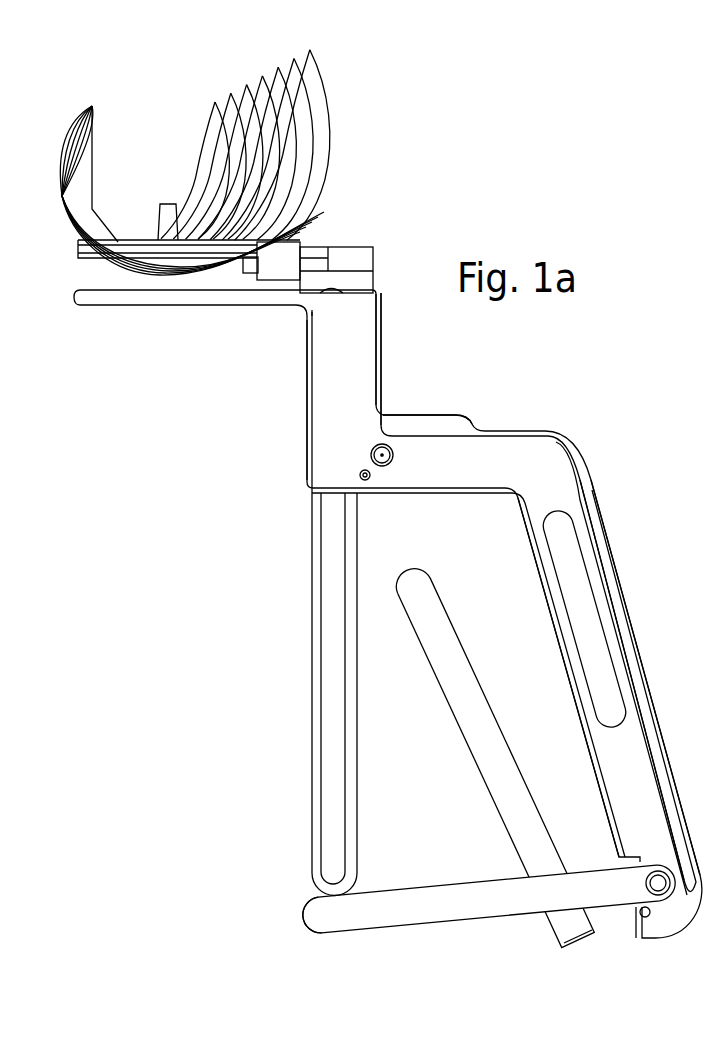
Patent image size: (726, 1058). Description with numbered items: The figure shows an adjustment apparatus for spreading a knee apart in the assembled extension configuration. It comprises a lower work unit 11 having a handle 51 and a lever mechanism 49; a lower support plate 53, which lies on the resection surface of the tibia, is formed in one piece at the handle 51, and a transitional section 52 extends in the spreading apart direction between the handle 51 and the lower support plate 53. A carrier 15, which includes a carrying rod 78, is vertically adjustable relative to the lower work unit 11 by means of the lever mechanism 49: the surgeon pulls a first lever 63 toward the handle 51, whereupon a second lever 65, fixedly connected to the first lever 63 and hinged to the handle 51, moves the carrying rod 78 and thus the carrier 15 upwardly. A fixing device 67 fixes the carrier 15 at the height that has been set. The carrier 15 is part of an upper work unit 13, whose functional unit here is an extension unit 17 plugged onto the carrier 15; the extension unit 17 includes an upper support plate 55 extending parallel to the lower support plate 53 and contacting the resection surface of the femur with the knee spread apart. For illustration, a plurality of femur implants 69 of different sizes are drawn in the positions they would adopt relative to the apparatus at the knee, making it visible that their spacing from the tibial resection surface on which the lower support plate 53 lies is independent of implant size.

The lower work unit 11 is at (637, 498).
The upper work unit 13 is at (352, 245).
The carrier 15 is at (305, 585).
The extension unit 17 is at (295, 241).
The lever mechanism 49 is at (313, 935).
The handle 51 is at (638, 667).
The transitional section 52 is at (325, 388).
The lower support plate 53 is at (122, 295).
The upper support plate 55 is at (135, 243).
The first lever 63 is at (448, 673).
The second lever 65 is at (450, 892).
The fixing device 67 is at (435, 427).
The femur implants 69 is at (334, 102).
The carrying rod 78 is at (332, 703).